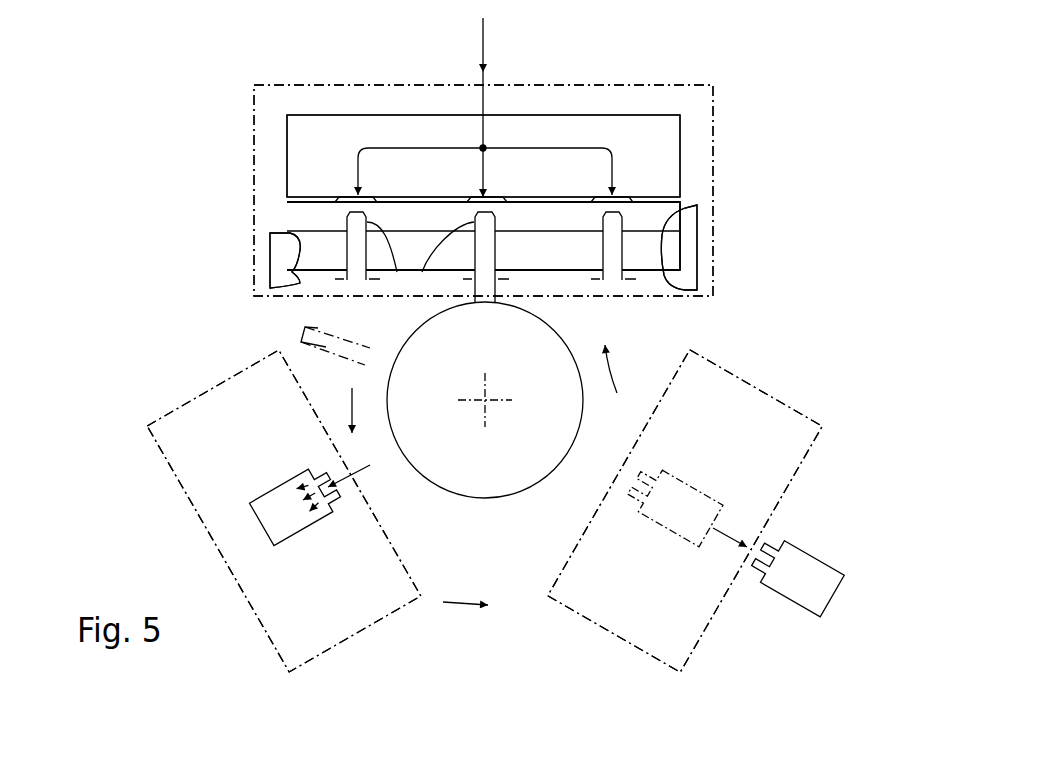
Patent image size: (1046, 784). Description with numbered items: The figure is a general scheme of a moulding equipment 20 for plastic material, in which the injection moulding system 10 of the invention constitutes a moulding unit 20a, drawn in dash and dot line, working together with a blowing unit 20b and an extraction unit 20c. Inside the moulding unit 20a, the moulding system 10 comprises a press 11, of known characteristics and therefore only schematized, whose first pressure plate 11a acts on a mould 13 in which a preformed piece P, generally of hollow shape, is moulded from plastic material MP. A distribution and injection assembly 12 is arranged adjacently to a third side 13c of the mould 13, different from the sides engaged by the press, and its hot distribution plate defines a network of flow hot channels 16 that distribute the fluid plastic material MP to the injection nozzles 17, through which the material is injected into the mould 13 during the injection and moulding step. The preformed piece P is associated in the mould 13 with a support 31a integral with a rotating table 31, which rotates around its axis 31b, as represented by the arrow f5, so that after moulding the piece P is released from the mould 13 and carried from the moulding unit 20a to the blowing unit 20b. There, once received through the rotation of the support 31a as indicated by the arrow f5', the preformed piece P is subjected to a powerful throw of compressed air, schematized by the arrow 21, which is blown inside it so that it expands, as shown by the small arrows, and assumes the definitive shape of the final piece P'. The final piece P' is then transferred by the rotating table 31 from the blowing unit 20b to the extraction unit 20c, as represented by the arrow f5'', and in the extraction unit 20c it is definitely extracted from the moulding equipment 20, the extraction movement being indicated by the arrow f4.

The moulding system 10 is at (237, 117).
The press 11 is at (720, 290).
The first pressure plate 11a is at (285, 263).
The distribution and injection assembly 12 is at (680, 140).
The mould 13 is at (280, 220).
The third side of the mould 13c is at (293, 201).
The flow hot channels 16 is at (577, 148).
The injection nozzles 17 is at (470, 202).
The moulding equipment 20 is at (130, 160).
The moulding unit 20a is at (715, 159).
The blowing unit 20b is at (178, 488).
The extraction unit 20c is at (705, 628).
The throw of compressed air 21 is at (370, 466).
The rotating table 31 is at (473, 491).
The support 31a is at (490, 277).
The axis of the rotating table 31b is at (483, 397).
The plastic material MP is at (482, 40).
The preformed piece P is at (491, 384).
The final piece P' is at (519, 534).
The transfer direction f4 is at (722, 537).
The arrow of rotation of the table f5 is at (630, 369).
The arrow of transfer to the blowing unit f5' is at (327, 406).
The arrow of transfer to the extraction unit f5'' is at (463, 627).